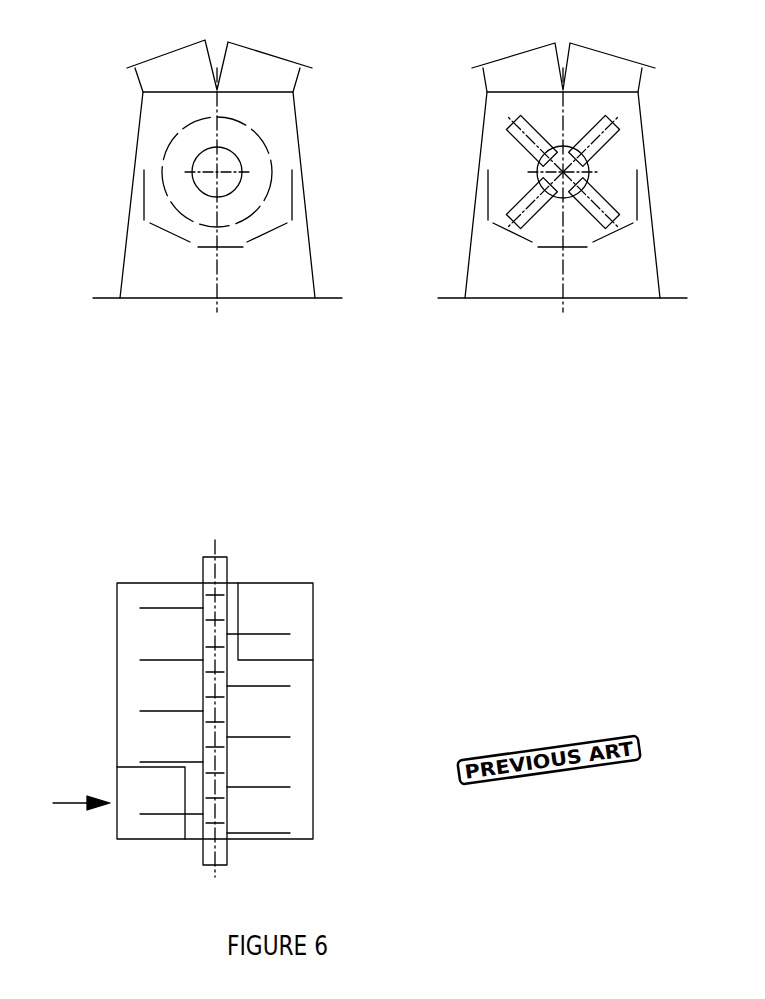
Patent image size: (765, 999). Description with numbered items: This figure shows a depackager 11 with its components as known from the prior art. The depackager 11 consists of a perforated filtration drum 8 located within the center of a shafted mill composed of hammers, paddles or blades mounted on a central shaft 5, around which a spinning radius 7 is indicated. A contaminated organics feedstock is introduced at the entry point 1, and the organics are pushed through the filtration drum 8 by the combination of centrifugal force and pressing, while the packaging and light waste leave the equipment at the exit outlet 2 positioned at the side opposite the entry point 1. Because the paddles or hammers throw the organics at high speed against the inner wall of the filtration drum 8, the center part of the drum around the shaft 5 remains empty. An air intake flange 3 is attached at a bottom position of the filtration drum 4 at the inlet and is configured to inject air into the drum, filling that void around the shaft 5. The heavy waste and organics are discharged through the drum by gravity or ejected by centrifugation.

The entry point 1 is at (130, 815).
The exit outlet 2 is at (605, 72).
The air intake flange 3 is at (605, 140).
The filtration drum 4 is at (310, 803).
The shaft 5 is at (220, 170).
The rotor circle 7 is at (272, 165).
The filtration drum 8 is at (293, 197).
The depackager 11 is at (207, 112).